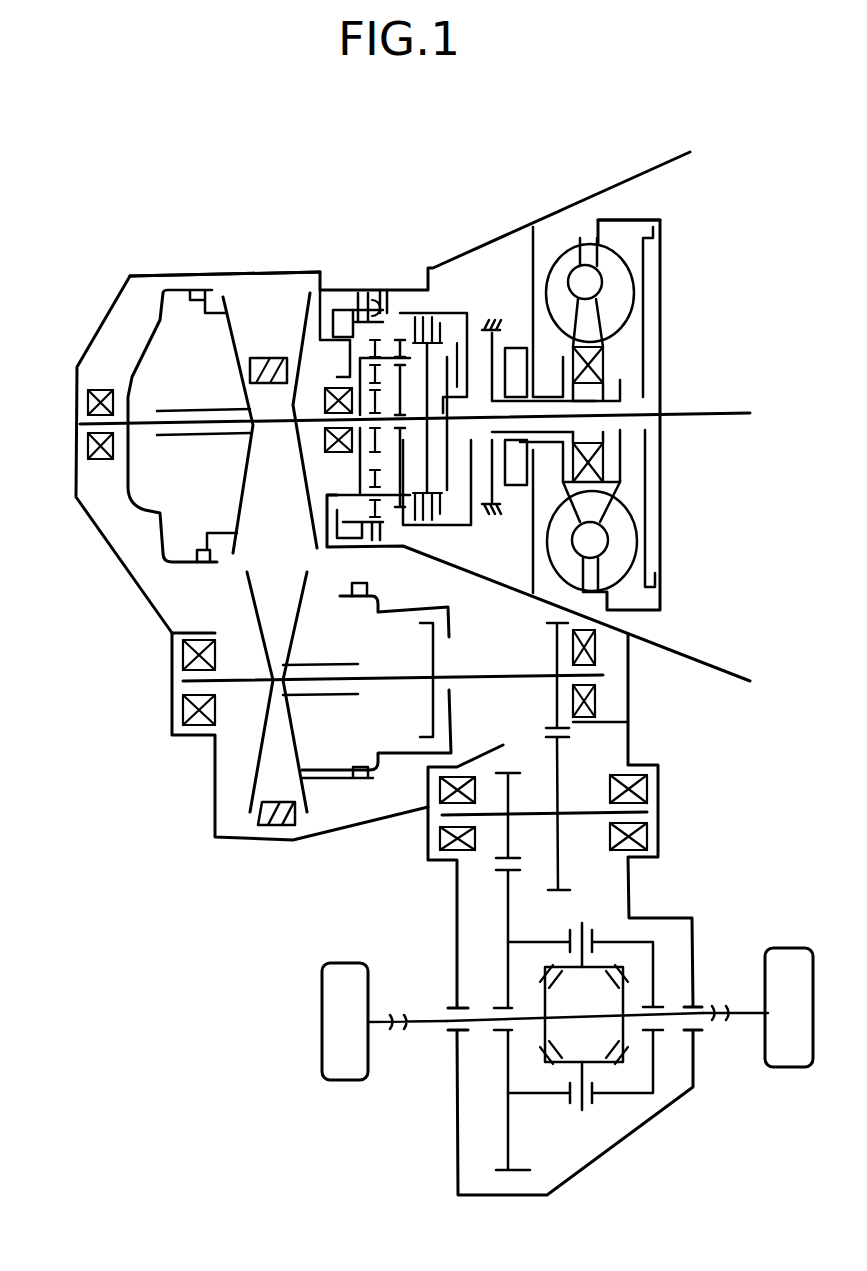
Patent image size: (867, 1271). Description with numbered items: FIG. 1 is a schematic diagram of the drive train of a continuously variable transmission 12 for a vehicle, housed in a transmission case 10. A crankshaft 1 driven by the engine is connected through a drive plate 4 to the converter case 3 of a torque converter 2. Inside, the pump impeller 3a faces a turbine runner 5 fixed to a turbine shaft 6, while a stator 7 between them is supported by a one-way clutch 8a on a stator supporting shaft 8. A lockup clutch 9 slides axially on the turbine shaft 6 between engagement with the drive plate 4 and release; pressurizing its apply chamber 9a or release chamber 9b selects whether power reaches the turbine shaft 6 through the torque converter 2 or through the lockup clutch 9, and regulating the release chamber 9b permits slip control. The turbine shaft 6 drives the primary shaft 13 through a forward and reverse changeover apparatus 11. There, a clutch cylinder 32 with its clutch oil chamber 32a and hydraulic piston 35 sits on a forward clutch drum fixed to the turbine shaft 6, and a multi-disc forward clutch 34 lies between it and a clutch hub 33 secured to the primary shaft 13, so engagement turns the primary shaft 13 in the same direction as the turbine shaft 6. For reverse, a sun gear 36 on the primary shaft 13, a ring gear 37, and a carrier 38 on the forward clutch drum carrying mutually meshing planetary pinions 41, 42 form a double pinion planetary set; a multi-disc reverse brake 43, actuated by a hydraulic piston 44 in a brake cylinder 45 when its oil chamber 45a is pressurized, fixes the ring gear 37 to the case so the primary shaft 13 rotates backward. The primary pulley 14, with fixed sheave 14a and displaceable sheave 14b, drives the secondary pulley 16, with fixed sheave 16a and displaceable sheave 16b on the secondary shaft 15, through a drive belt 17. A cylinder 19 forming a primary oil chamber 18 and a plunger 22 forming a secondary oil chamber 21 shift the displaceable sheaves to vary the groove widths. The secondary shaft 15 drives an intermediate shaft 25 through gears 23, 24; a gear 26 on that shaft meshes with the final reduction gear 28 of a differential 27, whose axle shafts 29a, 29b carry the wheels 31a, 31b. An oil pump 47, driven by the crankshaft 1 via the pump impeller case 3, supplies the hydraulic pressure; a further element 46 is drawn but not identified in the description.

The crankshaft 1 is at (745, 413).
The torque converter 2 is at (557, 240).
The converter case 3 is at (548, 247).
The pump impeller 3a is at (582, 240).
The drive plate 4 is at (661, 317).
The turbine runner 5 is at (620, 288).
The turbine shaft 6 is at (627, 453).
The stator 7 is at (592, 333).
The stator supporting shaft 8 is at (620, 413).
The one-way clutch 8a is at (603, 367).
The lockup clutch 9 is at (646, 535).
The apply chamber 9a is at (620, 227).
The release chamber 9b is at (650, 258).
The transmission case 10 is at (200, 273).
The forward and reverse changeover apparatus 11 is at (408, 273).
The continuously variable transmission 12 is at (132, 330).
The primary shaft 13 is at (128, 382).
The primary pulley 14 is at (178, 450).
The fixed sheave 14a is at (250, 447).
The displaceable sheave 14b is at (245, 495).
The secondary shaft 15 is at (183, 680).
The secondary pulley 16 is at (292, 659).
The fixed sheave 16a is at (247, 590).
The displaceable sheave 16b is at (287, 622).
The drive belt 17 is at (282, 828).
The primary oil chamber 18 is at (125, 312).
The cylinder 19 is at (147, 510).
The secondary oil chamber 21 is at (313, 742).
The plunger 22 is at (407, 750).
The gear 23 is at (557, 705).
The gear 24 is at (560, 753).
The intermediate shaft 25 is at (583, 817).
The gear 26 is at (500, 866).
The differential 27 is at (608, 1102).
The final reduction gear 28 is at (508, 928).
The axle shaft 29a is at (430, 1025).
The axle shaft 29b is at (750, 1016).
The wheel 31a is at (352, 1082).
The wheel 31b is at (790, 1069).
The clutch cylinder 32 is at (470, 512).
The clutch oil chamber 32a is at (462, 358).
The clutch hub 33 is at (432, 468).
The forward clutch 34 is at (432, 315).
The hydraulic piston 35 is at (467, 310).
The sun gear 36 is at (358, 470).
The ring gear 37 is at (360, 295).
The carrier 38 is at (385, 290).
The planetary pinion 41 is at (365, 362).
The planetary pinion 42 is at (335, 527).
The reverse brake 43 is at (370, 298).
The hydraulic piston 44 is at (333, 330).
The brake cylinder 45 is at (350, 305).
The oil chamber 45a is at (335, 318).
The bearing 46 is at (270, 400).
The oil pump 47 is at (515, 530).